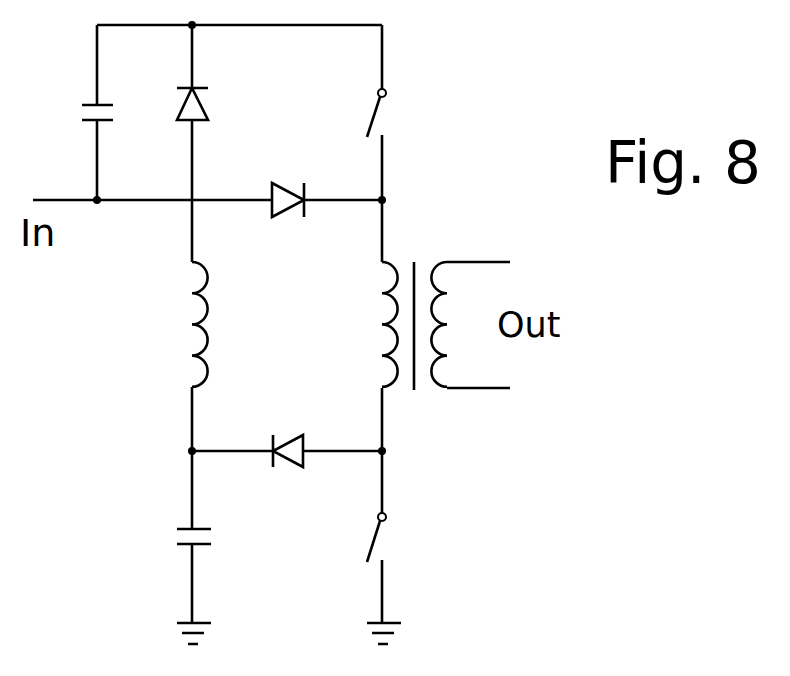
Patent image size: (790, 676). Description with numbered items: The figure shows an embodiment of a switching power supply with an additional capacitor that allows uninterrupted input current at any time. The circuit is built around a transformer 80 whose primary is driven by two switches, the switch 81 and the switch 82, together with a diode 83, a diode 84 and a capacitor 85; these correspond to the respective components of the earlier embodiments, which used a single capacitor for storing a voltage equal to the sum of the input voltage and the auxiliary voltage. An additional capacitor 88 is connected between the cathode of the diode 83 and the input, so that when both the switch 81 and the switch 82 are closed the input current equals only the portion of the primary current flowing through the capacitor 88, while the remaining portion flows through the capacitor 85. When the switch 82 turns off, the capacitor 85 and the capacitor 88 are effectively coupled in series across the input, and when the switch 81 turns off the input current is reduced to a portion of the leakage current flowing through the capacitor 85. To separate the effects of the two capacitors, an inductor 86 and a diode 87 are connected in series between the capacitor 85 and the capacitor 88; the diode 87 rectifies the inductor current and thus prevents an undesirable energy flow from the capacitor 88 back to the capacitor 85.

The transformer 80 is at (414, 262).
The switch 81 is at (386, 514).
The switch 82 is at (386, 90).
The diode 83 is at (290, 467).
The diode 84 is at (284, 217).
The capacitor 85 is at (180, 545).
The inductor 86 is at (208, 372).
The diode 87 is at (187, 122).
The capacitor 88 is at (82, 122).